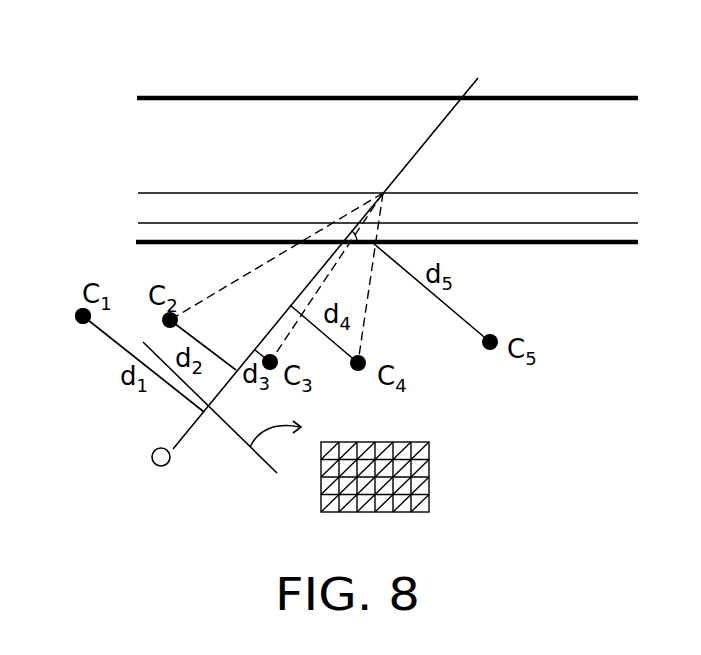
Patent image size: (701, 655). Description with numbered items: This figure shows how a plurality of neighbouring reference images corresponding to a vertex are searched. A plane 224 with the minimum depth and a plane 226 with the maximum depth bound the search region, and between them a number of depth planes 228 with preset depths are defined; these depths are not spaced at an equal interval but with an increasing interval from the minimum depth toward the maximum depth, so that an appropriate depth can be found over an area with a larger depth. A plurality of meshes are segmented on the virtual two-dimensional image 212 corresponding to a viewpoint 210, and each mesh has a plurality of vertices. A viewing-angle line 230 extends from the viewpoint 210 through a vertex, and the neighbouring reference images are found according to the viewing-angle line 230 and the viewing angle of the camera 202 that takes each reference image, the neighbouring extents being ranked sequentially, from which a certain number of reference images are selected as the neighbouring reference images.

The maximum depth plane 226 is at (157, 97).
The depth planes 228 is at (160, 193).
The minimum depth plane 224 is at (155, 243).
The viewing-angle line 230 is at (444, 118).
The camera 202 is at (80, 325).
The viewpoint 210 is at (160, 467).
The virtual 2-D image 212 is at (268, 472).